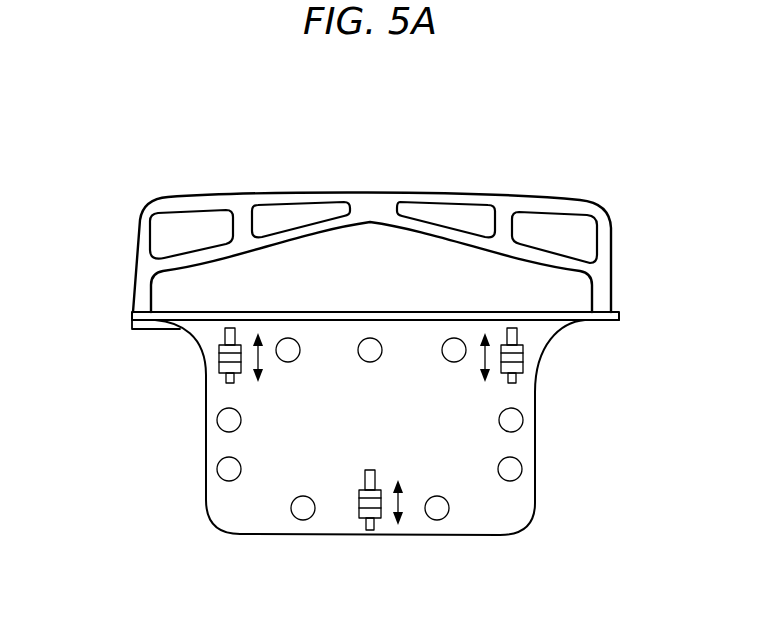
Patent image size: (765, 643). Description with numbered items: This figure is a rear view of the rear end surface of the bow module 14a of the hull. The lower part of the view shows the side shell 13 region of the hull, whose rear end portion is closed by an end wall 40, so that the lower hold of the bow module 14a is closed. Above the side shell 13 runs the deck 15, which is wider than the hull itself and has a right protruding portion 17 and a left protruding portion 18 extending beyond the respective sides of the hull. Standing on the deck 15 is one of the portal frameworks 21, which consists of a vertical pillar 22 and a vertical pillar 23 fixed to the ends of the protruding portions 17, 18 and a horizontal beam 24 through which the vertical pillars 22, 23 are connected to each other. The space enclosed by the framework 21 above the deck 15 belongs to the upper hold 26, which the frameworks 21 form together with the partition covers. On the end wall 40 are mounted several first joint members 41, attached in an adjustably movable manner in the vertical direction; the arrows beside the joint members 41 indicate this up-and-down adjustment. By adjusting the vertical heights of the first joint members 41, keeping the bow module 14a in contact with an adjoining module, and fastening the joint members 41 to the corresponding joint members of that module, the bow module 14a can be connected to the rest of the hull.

The left side shell 13 is at (206, 463).
The bow module 14a is at (550, 378).
The deck 15 is at (371, 312).
The right protruding portion 17 is at (540, 312).
The left protruding portion 18 is at (142, 312).
The portal framework 21 is at (375, 205).
The vertical pillar 22 is at (155, 270).
The vertical pillar 23 is at (592, 270).
The horizontal beam 24 is at (443, 200).
The upper hold 26 is at (301, 258).
The end wall 40 is at (397, 427).
The first joint member 41 is at (220, 352).